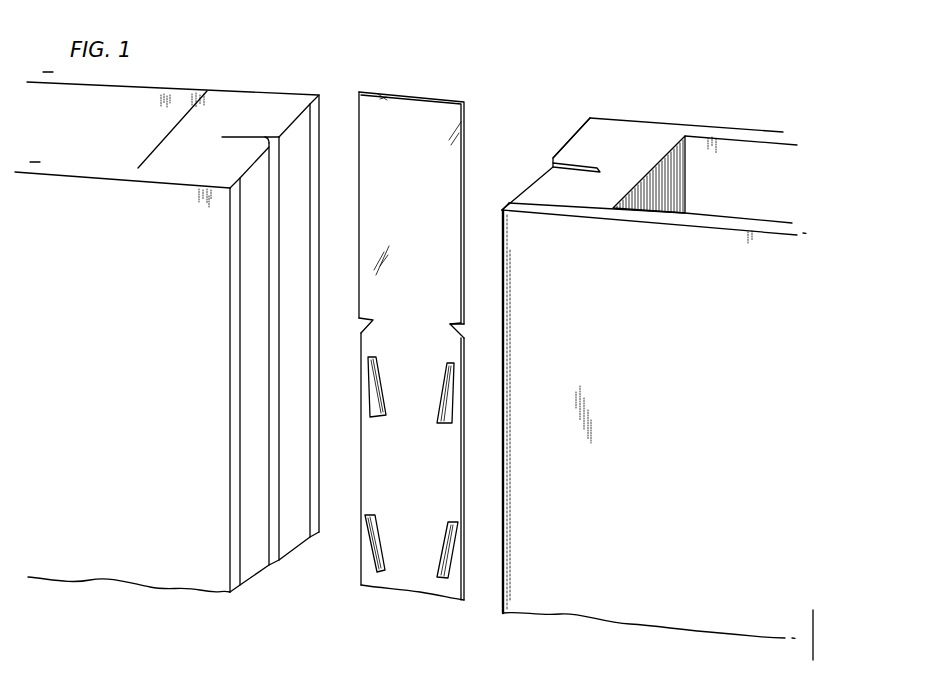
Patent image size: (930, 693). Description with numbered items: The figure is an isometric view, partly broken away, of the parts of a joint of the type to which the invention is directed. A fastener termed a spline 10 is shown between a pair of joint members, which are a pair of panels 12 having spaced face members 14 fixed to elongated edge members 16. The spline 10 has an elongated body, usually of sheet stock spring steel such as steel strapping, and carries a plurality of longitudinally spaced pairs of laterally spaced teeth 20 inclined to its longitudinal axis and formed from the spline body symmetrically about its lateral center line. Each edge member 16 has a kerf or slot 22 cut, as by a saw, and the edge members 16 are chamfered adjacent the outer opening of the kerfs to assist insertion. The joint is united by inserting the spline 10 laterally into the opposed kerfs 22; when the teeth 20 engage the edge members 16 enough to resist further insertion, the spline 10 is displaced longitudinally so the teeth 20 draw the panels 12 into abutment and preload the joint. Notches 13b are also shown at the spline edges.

The spline 10 is at (378, 207).
The panel 12 is at (117, 352).
The notch 13b is at (367, 326).
The face member 14 is at (156, 87).
The edge member 16 is at (280, 105).
The teeth 20 is at (448, 395).
The kerf 22 is at (233, 138).